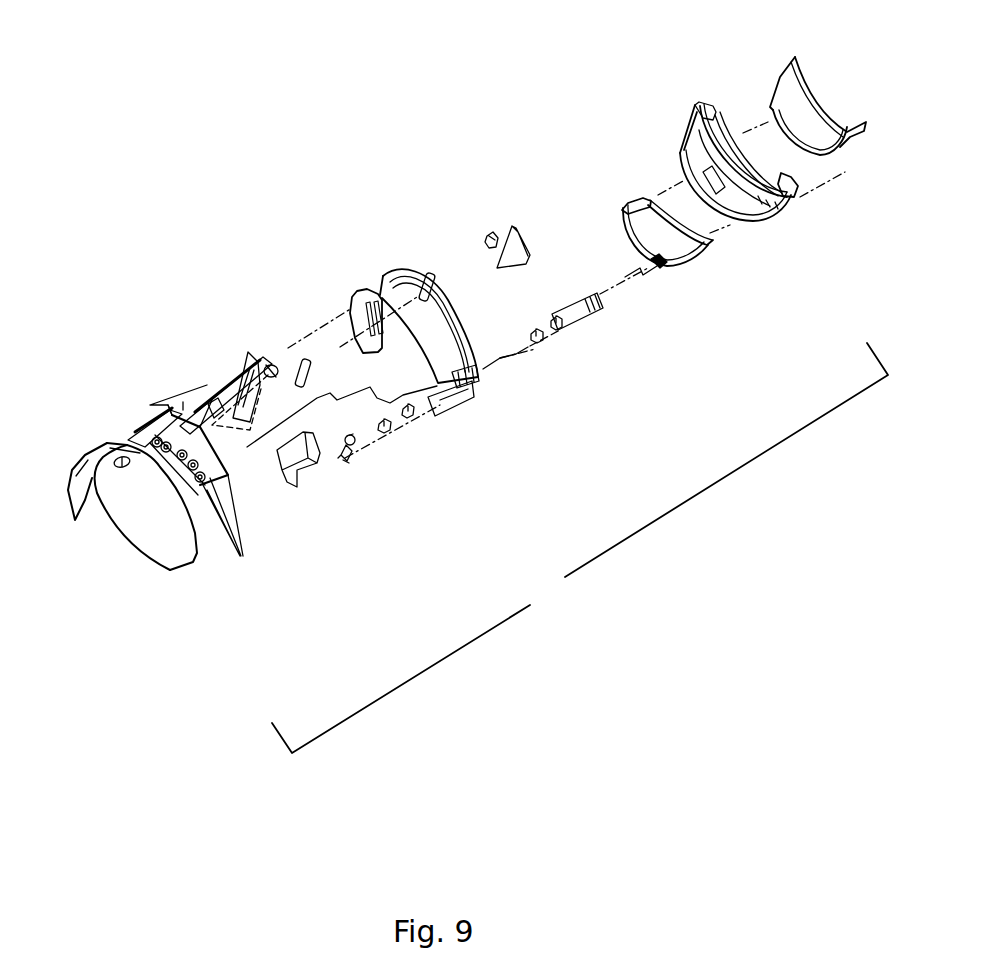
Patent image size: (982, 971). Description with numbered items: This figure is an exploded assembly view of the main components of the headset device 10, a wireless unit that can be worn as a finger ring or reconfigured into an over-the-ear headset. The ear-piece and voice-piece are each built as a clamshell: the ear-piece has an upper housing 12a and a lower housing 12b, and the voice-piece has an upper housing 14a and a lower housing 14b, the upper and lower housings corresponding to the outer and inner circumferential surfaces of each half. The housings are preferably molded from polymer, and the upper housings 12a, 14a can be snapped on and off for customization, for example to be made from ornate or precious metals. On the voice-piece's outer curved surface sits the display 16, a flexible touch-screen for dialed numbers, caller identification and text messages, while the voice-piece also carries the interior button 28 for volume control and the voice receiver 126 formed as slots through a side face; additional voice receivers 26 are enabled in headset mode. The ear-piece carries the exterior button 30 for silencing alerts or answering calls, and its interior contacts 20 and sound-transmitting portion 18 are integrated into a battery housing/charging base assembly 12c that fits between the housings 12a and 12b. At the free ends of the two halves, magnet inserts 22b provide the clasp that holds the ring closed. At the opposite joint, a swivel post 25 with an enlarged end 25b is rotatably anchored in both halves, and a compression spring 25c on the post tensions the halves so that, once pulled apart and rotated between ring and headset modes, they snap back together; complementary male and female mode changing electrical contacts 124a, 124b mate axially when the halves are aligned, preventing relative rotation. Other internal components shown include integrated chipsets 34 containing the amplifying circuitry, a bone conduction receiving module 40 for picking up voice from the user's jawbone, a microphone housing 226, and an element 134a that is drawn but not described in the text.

The headset device 10 is at (580, 548).
The upper housing 12a is at (145, 477).
The lower housing 12b is at (470, 373).
The battery housing/charging base assembly 12c is at (162, 440).
The upper housing 14a is at (693, 152).
The lower housing 14b is at (800, 120).
The display 16 is at (677, 258).
The sound-transmitting portion 18 is at (207, 460).
The interior contacts 20 is at (238, 553).
The magnet inserts 22b is at (298, 360).
The swivel post 25 is at (355, 442).
The enlarged end 25b is at (357, 438).
The compression spring 25c is at (347, 445).
The voice receivers 26 is at (698, 105).
The interior button 28 is at (662, 262).
The exterior button 30 is at (267, 368).
The integrated chipsets 34 is at (197, 408).
The bone conduction receiving module 40 is at (292, 453).
The mode changing electrical contact 124a is at (562, 323).
The mode changing electrical contact 124b is at (413, 415).
The voice receiver 126 is at (790, 187).
The bolt 134a is at (220, 378).
The microphone housing 226 is at (510, 227).